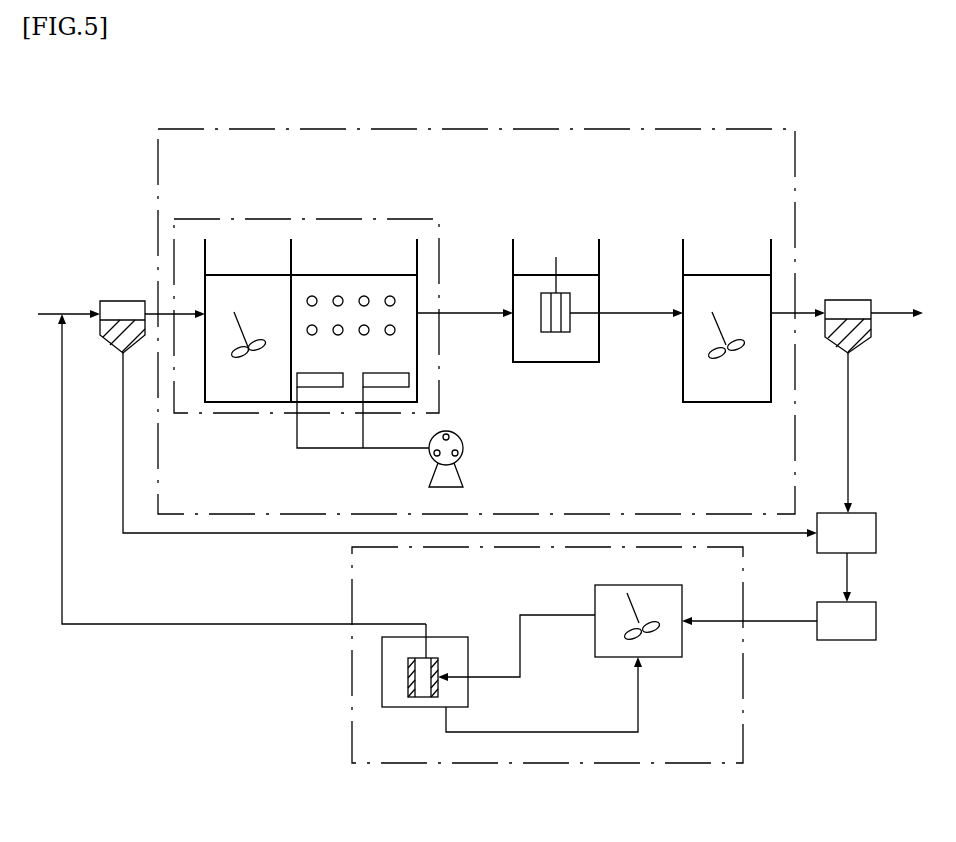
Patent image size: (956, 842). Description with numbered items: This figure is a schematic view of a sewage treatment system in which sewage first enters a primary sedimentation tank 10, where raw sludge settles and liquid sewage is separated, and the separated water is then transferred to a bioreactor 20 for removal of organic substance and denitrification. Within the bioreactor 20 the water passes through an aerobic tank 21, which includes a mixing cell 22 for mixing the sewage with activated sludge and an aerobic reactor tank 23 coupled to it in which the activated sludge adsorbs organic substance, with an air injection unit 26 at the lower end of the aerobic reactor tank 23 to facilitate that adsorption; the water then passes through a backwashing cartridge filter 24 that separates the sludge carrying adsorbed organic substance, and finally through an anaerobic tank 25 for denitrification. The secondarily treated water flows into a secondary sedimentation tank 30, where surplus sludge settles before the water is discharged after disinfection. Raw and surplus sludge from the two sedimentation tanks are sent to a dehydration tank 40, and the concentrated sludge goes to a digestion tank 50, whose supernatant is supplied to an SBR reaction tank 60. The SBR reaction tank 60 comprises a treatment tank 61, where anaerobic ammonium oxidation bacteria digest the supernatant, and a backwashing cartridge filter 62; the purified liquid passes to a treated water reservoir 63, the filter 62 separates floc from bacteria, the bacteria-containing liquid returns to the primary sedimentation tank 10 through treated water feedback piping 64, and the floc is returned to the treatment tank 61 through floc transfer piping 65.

The primary sedimentation tank 10 is at (123, 300).
The bioreactor 20 is at (477, 129).
The aerobic tank 21 is at (305, 219).
The mixing cell 22 is at (229, 382).
The aerobic reactor tank 23 is at (408, 352).
The backwashing cartridge filter 24 is at (564, 290).
The anaerobic tank 25 is at (727, 390).
The air injection unit 26 is at (463, 439).
The secondary sedimentation tank 30 is at (847, 295).
The dehydration tank 40 is at (876, 529).
The digestion tank 50 is at (876, 618).
The SBR reaction tank 60 is at (745, 657).
The treatment tank 61 is at (673, 603).
The backwashing cartridge filter 62 is at (418, 647).
The treated water reservoir 63 is at (425, 707).
The treated water feedback piping 64 is at (242, 624).
The floc transfer piping 65 is at (540, 732).